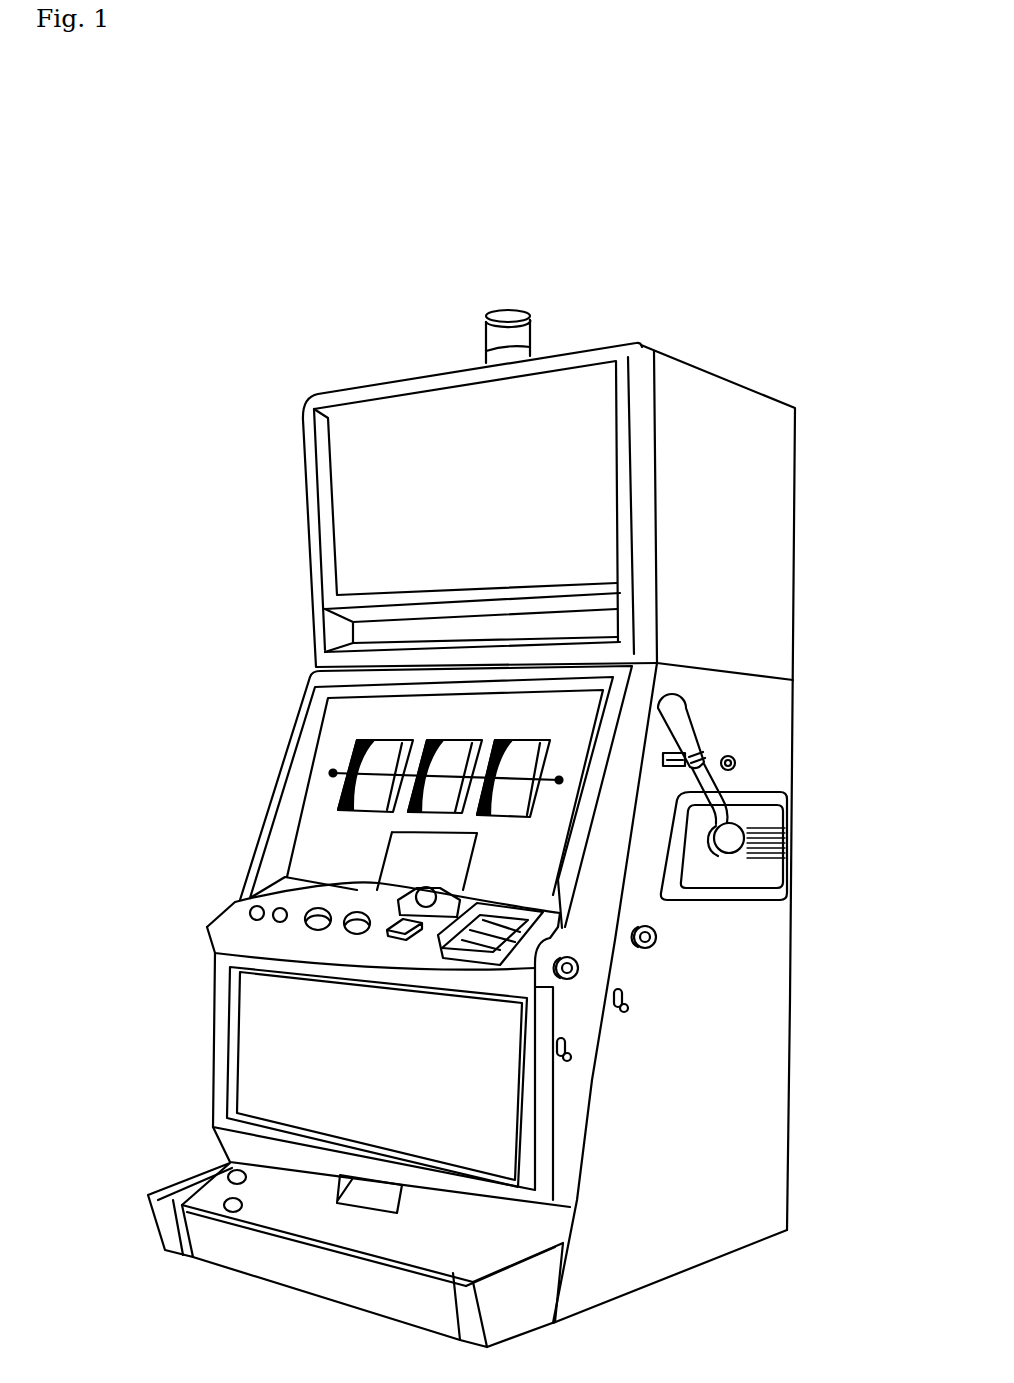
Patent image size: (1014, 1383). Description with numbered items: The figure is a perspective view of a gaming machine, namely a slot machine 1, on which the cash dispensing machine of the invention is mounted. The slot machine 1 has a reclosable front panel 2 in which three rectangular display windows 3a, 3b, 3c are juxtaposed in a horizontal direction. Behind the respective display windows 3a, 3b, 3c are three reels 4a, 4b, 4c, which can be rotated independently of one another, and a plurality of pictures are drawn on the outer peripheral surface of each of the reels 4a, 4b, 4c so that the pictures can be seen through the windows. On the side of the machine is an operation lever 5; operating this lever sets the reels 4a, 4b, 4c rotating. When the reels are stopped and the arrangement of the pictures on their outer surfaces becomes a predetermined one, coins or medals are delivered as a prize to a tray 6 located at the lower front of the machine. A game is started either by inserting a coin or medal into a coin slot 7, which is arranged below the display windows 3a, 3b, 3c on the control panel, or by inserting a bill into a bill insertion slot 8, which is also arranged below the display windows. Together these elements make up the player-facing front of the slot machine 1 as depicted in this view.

The slot machine 1 is at (669, 304).
The reclosable front panel 2 is at (328, 830).
The display window 3a is at (362, 742).
The display window 3b is at (433, 740).
The display window 3c is at (503, 740).
The reel 4a is at (373, 800).
The reel 4b is at (442, 808).
The reel 4c is at (512, 808).
The operation lever 5 is at (685, 720).
The tray 6 is at (212, 1197).
The coin slot 7 is at (398, 888).
The bill insertion slot 8 is at (438, 957).